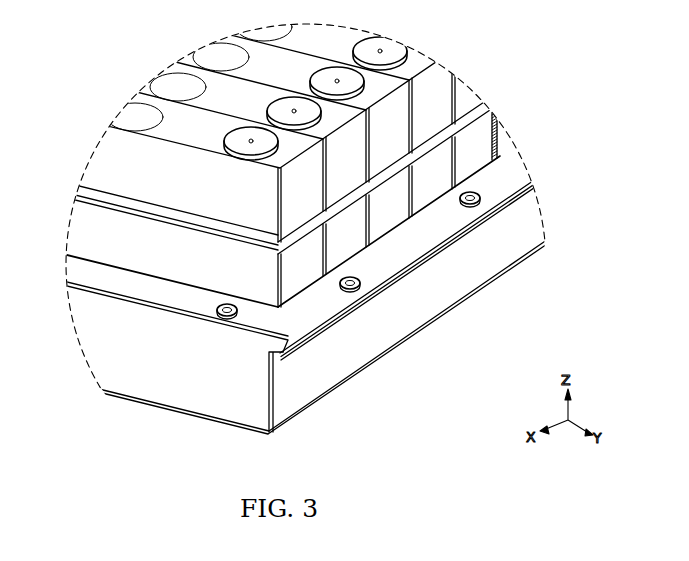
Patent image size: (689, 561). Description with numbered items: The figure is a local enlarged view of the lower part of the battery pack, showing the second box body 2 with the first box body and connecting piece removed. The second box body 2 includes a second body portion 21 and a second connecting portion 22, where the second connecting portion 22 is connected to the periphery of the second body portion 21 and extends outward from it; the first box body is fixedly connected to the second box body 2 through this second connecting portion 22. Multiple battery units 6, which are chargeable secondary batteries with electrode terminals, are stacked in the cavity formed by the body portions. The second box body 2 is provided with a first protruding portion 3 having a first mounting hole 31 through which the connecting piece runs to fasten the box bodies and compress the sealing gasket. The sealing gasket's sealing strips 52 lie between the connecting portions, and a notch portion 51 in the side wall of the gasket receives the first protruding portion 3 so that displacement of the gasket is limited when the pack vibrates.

The second box body 2 is at (286, 314).
The second body portion 21 is at (383, 352).
The second connecting portion 22 is at (66, 272).
The first protruding portion 3 is at (309, 256).
The first mounting hole 31 is at (480, 205).
The notch portion 51 is at (470, 126).
The sealing strip 52 is at (482, 107).
The battery unit 6 is at (337, 31).